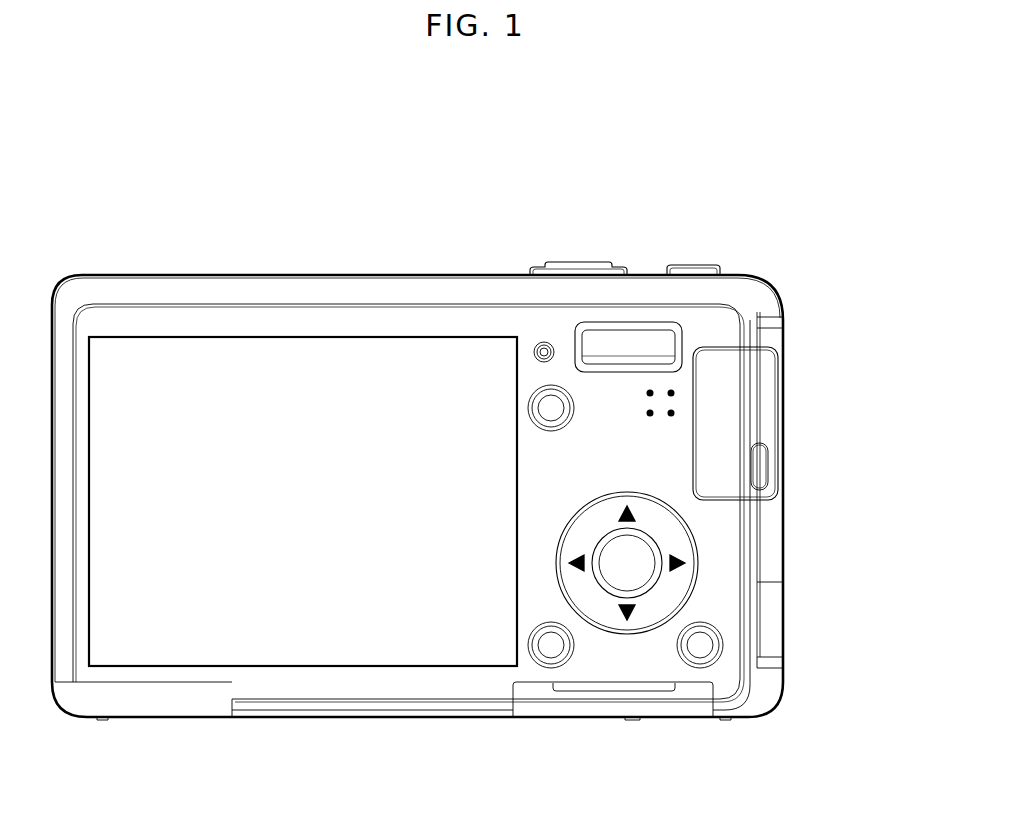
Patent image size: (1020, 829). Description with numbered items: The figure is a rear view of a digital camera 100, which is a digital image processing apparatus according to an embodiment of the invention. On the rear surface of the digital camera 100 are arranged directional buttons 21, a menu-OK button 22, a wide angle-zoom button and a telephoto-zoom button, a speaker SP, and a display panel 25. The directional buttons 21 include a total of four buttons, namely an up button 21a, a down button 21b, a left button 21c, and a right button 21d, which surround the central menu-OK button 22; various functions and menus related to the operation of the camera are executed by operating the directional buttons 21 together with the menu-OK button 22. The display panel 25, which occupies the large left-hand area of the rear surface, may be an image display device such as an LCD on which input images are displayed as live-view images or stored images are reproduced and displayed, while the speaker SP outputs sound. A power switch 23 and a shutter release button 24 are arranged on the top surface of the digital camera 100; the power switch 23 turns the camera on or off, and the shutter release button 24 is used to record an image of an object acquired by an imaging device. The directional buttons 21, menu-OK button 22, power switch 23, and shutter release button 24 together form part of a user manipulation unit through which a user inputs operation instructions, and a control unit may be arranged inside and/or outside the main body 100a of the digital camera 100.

The digital camera 100 is at (752, 233).
The main body 100a is at (783, 470).
The directional buttons 21 is at (607, 647).
The up button 21a is at (627, 506).
The down button 21b is at (628, 620).
The left button 21c is at (575, 562).
The right button 21d is at (684, 564).
The menu-OK button 22 is at (643, 578).
The power switch 23 is at (691, 265).
The shutter release button 24 is at (578, 262).
The display panel 25 is at (316, 648).
The speaker SP is at (675, 393).